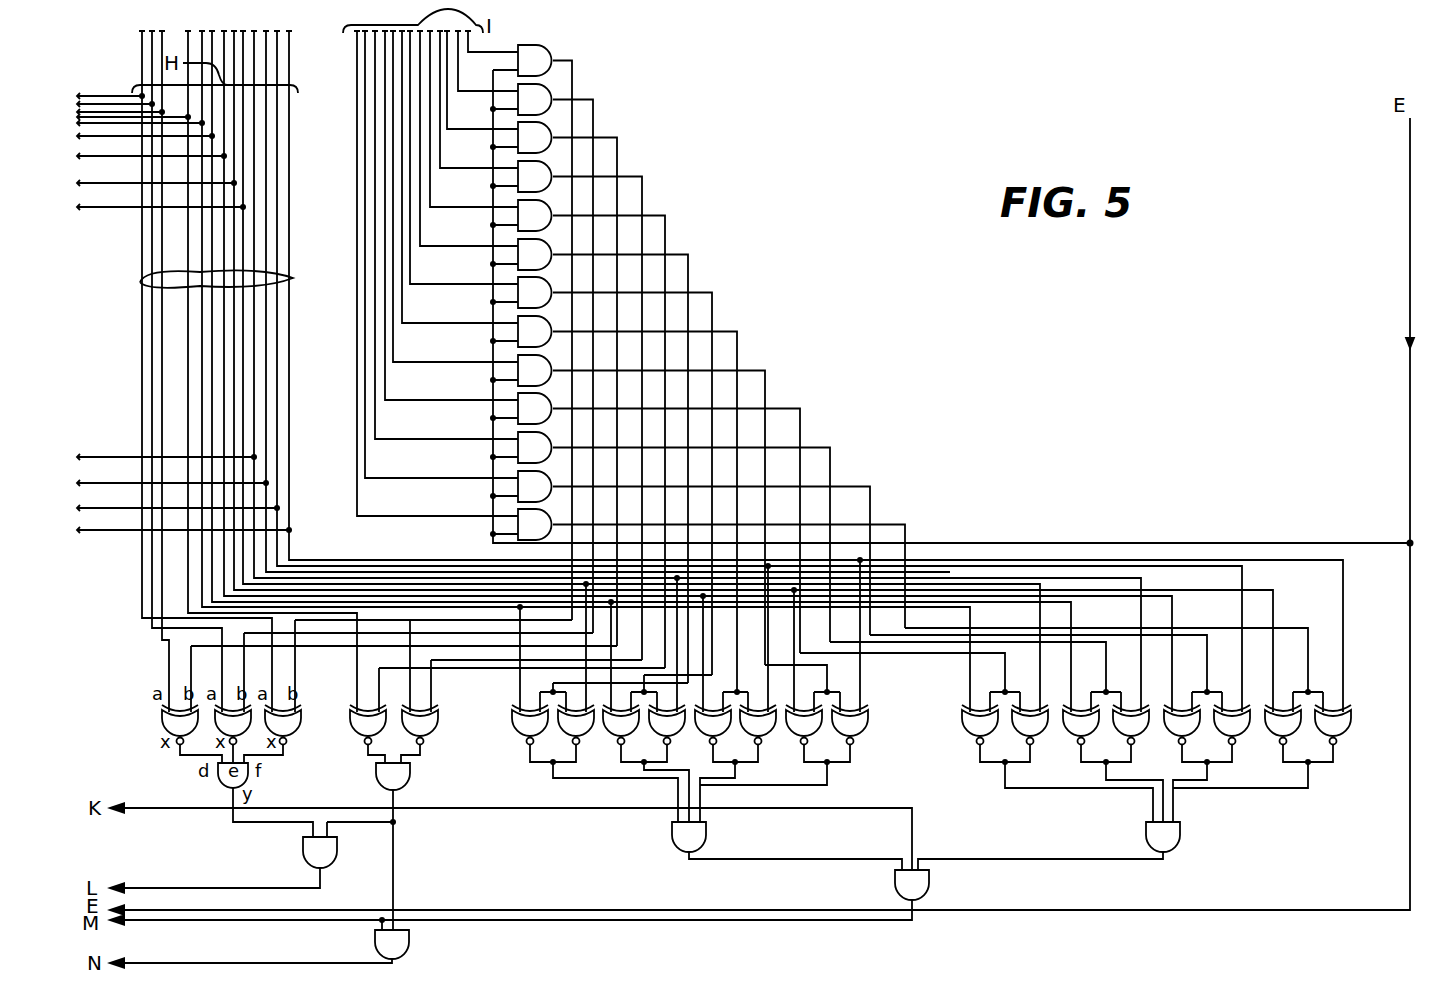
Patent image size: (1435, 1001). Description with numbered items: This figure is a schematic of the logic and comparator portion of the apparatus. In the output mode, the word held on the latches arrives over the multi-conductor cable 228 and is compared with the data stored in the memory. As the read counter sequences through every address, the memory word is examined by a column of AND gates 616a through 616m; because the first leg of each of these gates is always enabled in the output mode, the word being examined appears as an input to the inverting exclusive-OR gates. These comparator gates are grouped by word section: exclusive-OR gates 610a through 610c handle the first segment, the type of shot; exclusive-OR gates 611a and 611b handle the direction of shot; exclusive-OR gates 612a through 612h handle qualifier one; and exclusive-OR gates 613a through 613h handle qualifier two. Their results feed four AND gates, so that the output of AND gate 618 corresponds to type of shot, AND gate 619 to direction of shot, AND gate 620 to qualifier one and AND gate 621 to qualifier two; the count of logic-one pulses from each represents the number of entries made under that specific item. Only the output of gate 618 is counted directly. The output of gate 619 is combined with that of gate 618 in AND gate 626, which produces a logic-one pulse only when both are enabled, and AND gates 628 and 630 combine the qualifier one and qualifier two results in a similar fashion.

The multi-conductor cable 228 is at (293, 278).
The AND gate 616a is at (553, 50).
The AND gate 616m is at (515, 531).
The exclusive-OR gate 610a is at (300, 710).
The exclusive-OR gate 610c is at (160, 720).
The exclusive-OR gate 611a is at (353, 748).
The exclusive-OR gate 611b is at (437, 722).
The exclusive-OR gate 612a is at (514, 733).
The exclusive-OR gate 612h is at (868, 724).
The exclusive-OR gate 613a is at (964, 734).
The exclusive-OR gate 613h is at (1345, 745).
The AND gate 618 is at (219, 789).
The AND gate 619 is at (410, 780).
The AND gate 620 is at (672, 832).
The AND gate 621 is at (1180, 835).
The AND gate 626 is at (303, 852).
The AND gate 628 is at (895, 885).
The AND gate 630 is at (409, 945).